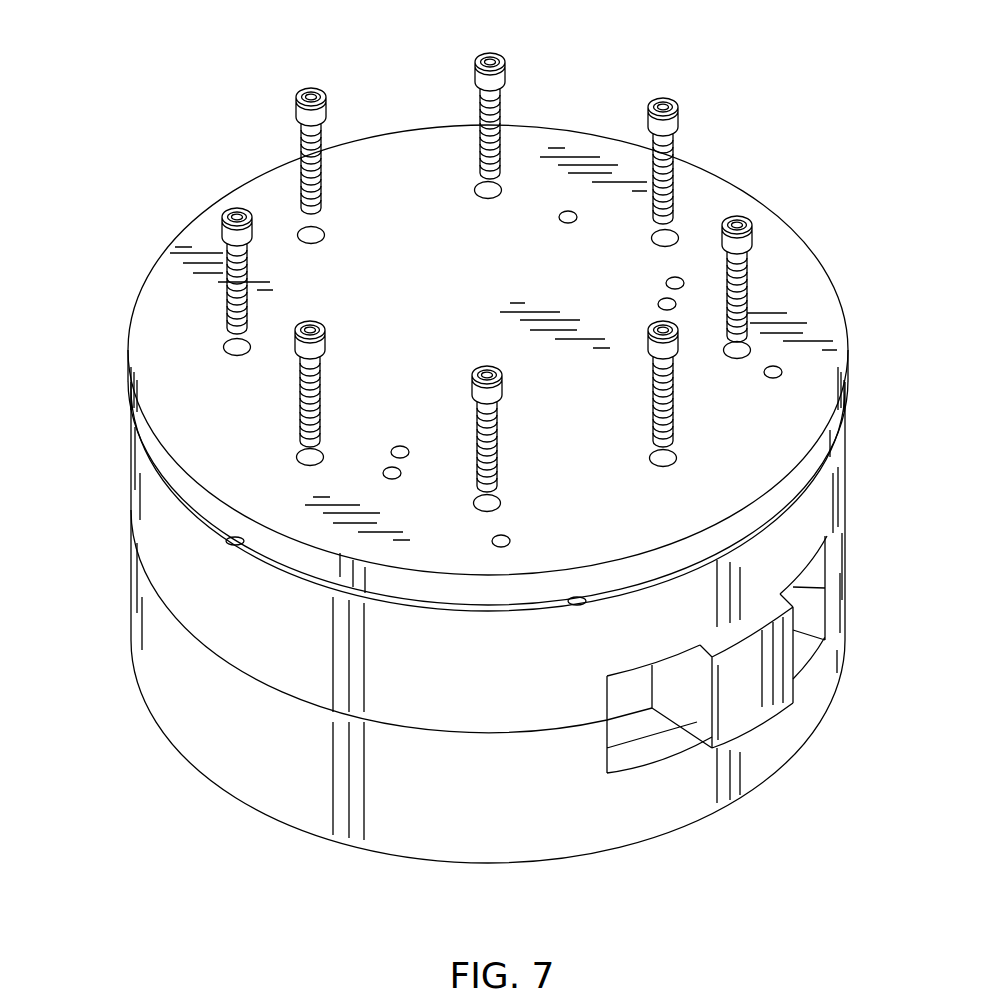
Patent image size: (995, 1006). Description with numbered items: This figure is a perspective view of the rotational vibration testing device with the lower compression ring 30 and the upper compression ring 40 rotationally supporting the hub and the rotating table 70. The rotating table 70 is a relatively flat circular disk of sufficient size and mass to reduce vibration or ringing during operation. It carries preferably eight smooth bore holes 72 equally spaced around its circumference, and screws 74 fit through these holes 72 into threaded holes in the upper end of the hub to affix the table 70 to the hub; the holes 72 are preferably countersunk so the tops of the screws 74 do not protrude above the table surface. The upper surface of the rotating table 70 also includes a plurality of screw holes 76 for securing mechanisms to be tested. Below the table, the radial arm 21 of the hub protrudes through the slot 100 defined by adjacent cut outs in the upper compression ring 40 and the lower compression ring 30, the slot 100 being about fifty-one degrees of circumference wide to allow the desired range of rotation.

The radial arm 21 is at (736, 703).
The lower compression ring 30 is at (197, 702).
The upper compression ring 40 is at (187, 530).
The rotating table 70 is at (182, 364).
The bore holes 72 is at (480, 189).
The screws 74 is at (669, 96).
The screw holes 76 is at (776, 370).
The slot 100 is at (642, 712).